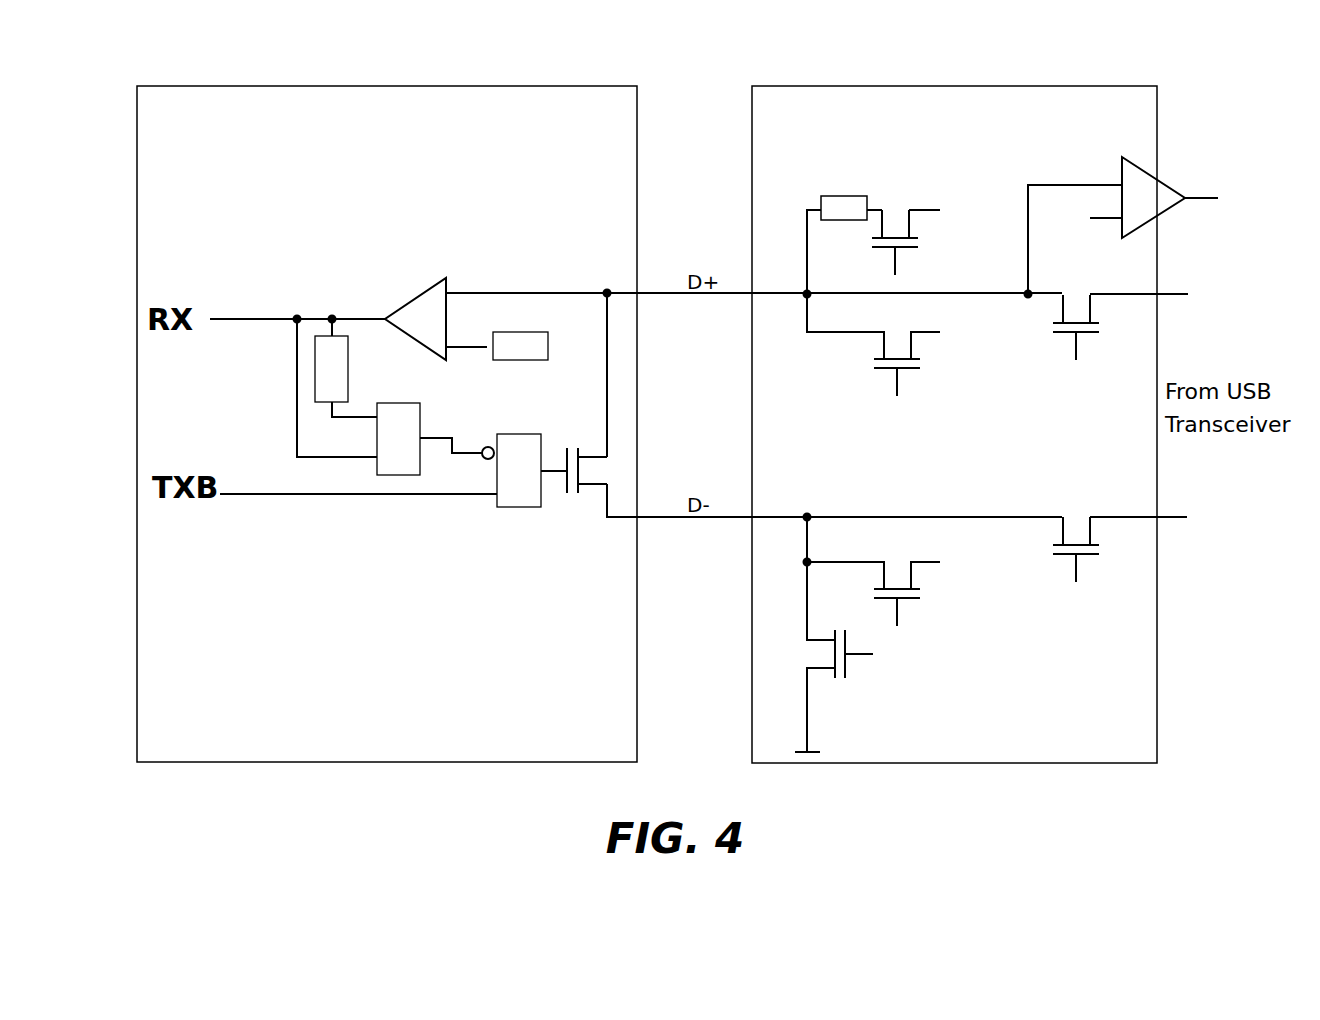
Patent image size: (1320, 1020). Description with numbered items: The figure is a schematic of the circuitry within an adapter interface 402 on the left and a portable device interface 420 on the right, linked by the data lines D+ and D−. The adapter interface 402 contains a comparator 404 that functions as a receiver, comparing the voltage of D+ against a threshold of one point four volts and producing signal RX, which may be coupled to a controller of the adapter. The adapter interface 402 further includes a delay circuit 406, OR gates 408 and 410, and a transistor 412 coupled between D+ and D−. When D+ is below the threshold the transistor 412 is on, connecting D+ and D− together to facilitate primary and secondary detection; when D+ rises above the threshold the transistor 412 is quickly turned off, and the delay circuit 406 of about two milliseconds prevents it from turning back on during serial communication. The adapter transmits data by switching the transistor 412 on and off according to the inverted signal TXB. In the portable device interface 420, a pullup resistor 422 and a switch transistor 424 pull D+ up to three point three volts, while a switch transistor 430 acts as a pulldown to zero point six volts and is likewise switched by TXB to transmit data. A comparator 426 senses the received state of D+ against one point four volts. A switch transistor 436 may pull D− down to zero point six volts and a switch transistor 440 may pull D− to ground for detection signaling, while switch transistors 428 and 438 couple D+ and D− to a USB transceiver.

The adapter interface 402 is at (455, 85).
The comparator 404 is at (425, 290).
The delay circuit 406 is at (348, 371).
The OR gate 408 is at (400, 403).
The OR gate 410 is at (504, 434).
The transistor 412 is at (597, 487).
The portable device interface 420 is at (880, 85).
The pullup resistor 422 is at (851, 220).
The switch transistor 424 is at (910, 250).
The comparator 426 is at (1168, 184).
The switch transistor 428 is at (1090, 335).
The switch transistor 430 is at (870, 362).
The switch transistor 436 is at (910, 601).
The switch transistor 438 is at (1090, 557).
The switch transistor 440 is at (820, 667).